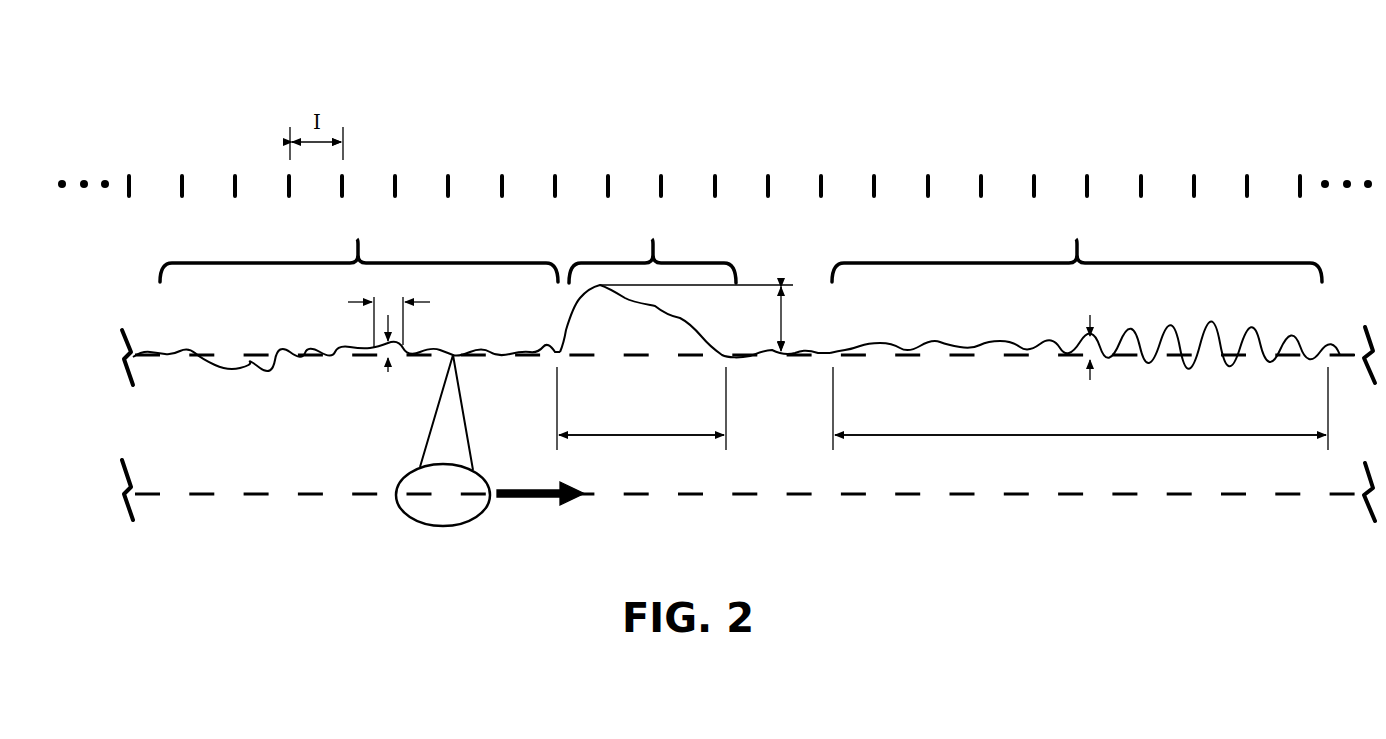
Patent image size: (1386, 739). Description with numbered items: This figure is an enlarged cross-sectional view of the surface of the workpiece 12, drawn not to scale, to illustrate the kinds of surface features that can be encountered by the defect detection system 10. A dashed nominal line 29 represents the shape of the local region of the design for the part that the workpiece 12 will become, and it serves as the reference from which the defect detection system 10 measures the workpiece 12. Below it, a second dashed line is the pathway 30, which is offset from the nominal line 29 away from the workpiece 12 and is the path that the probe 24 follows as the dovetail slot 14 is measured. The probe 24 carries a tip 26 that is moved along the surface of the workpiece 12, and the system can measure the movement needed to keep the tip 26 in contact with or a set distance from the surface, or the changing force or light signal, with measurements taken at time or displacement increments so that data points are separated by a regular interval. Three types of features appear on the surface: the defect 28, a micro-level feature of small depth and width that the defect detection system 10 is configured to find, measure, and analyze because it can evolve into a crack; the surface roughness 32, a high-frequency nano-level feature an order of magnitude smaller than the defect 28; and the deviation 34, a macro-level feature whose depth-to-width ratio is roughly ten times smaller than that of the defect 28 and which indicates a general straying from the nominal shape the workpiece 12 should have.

The defect detection system 10 is at (290, 515).
The workpiece 12 is at (188, 362).
The dovetail slot 14 is at (165, 342).
The probe 24 is at (398, 500).
The tip 26 is at (424, 451).
The defect 28 is at (700, 340).
The nominal line 29 is at (258, 350).
The pathway 30 is at (197, 490).
The surface roughness 32 is at (359, 245).
The deviation 34 is at (1092, 341).